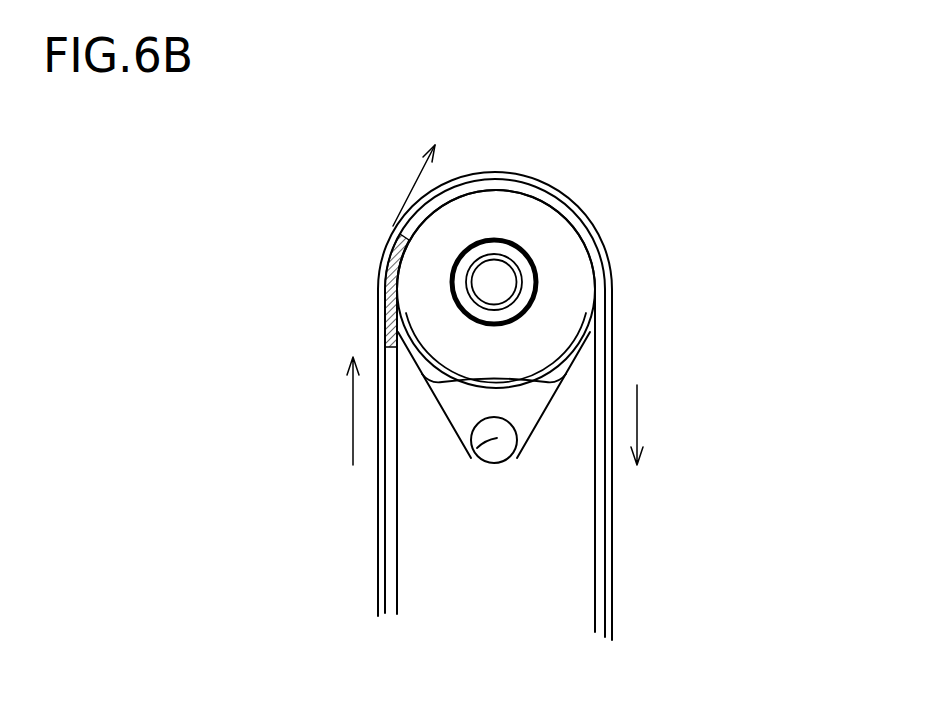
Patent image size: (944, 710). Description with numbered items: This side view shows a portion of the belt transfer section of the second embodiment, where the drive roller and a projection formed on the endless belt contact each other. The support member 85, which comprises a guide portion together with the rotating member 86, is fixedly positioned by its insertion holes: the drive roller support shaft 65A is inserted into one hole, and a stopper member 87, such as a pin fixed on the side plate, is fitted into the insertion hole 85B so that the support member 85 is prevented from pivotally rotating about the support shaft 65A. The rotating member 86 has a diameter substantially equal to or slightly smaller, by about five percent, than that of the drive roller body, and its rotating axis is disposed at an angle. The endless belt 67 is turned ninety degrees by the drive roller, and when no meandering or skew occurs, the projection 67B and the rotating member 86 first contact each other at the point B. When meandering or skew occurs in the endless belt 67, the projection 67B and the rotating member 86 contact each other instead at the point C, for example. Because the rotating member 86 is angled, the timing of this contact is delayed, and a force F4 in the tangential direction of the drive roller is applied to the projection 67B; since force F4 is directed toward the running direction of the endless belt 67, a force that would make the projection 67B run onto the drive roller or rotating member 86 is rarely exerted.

The point B is at (493, 178).
The point C is at (398, 243).
The force F4 is at (423, 169).
The rotating member 86 is at (540, 218).
The drive roller support shaft 65A is at (494, 282).
The support member 85 is at (558, 373).
The stopper member 87 is at (473, 453).
The insertion hole 85B is at (520, 447).
The endless belt 67 is at (612, 560).
The projection 67B is at (385, 507).